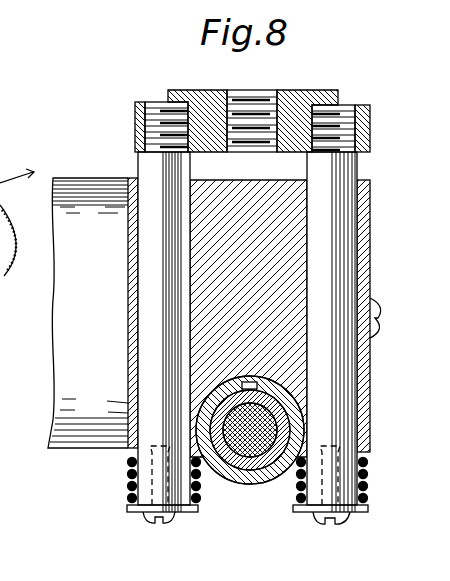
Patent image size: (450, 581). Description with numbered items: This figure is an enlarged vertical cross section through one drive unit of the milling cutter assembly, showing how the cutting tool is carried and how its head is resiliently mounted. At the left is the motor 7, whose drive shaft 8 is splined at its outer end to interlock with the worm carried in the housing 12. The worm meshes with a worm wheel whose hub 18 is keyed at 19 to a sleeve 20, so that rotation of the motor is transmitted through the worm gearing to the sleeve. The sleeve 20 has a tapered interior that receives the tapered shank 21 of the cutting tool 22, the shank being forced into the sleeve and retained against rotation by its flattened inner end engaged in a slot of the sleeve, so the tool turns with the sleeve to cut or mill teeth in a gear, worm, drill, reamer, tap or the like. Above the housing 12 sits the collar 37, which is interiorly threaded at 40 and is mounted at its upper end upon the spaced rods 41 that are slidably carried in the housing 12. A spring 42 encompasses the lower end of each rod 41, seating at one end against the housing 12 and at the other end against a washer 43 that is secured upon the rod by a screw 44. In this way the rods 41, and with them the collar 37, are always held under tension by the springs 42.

The motor 7 is at (52, 380).
The drive shaft 8 is at (14, 175).
The housing 12 is at (257, 496).
The hub 18 is at (200, 426).
The key 19 is at (376, 360).
The sleeve 20 is at (200, 414).
The tapered shank 21 is at (257, 487).
The cutting tool 22 is at (4, 268).
The collar 37 is at (322, 92).
The interior threads 40 is at (268, 91).
The spaced rods 41 is at (113, 453).
The spring 42 is at (198, 492).
The washer 43 is at (198, 512).
The screw 44 is at (155, 517).